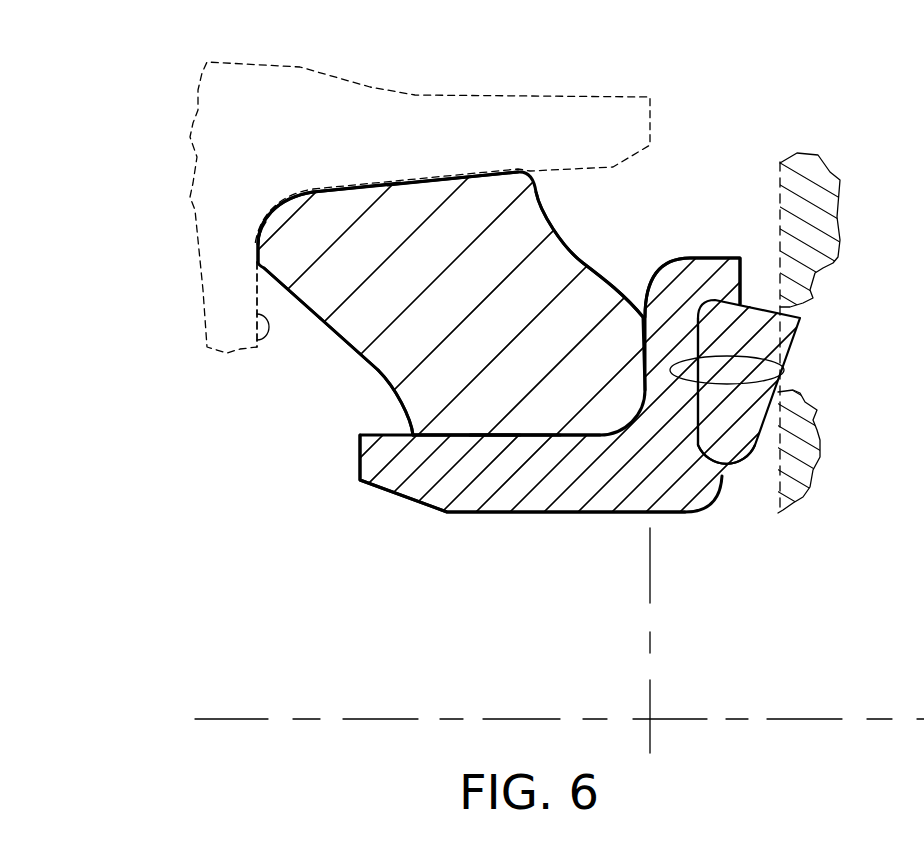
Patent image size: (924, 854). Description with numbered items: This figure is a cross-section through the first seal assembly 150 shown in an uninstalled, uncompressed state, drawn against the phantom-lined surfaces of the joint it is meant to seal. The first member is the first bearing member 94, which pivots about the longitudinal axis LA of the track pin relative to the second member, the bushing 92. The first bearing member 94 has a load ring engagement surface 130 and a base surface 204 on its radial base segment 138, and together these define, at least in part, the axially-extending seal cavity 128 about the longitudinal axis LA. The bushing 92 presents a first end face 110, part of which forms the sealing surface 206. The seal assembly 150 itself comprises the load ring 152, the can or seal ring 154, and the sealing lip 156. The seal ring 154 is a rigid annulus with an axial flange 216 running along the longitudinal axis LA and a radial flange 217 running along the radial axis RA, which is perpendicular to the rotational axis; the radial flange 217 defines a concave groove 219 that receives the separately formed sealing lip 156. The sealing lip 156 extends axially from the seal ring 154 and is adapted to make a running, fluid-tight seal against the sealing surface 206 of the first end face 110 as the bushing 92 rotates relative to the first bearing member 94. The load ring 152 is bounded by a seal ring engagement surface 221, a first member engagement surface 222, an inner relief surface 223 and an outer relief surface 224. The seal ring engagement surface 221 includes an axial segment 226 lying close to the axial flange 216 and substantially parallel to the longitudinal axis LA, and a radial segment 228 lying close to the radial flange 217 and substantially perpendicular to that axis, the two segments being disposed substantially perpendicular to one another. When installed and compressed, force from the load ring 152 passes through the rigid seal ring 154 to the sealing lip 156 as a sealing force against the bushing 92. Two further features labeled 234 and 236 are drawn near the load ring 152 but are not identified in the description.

The bushing 92 is at (814, 198).
The first bearing member 94 is at (220, 117).
The first end face 110 is at (780, 206).
The seal cavity 128 is at (305, 324).
The load ring engagement surface 130 is at (298, 192).
The radial base segment 138 is at (257, 290).
The first seal assembly 150 is at (352, 390).
The load ring 152 is at (467, 212).
The seal ring 154 is at (560, 493).
The sealing lip 156 is at (733, 437).
The base surface 204 is at (257, 338).
The sealing surface 206 is at (780, 250).
The axial flange 216 is at (522, 493).
The radial flange 217 is at (665, 377).
The concave groove 219 is at (786, 368).
The seal ring engagement surface 221 is at (455, 452).
The first member engagement surface 222 is at (344, 178).
The inner relief surface 223 is at (348, 355).
The outer relief surface 224 is at (592, 256).
The axial segment 226 is at (497, 440).
The radial segment 228 is at (650, 333).
The top surface portion 234 is at (388, 185).
The corner edge 236 is at (257, 247).
The longitudinal axis LA is at (508, 717).
The radial axis RA is at (650, 637).